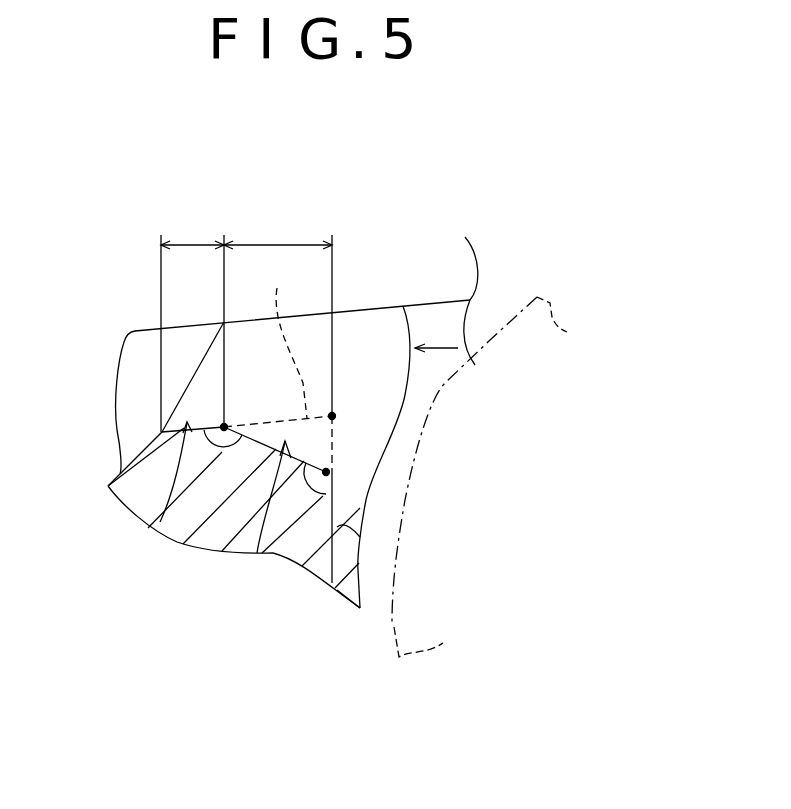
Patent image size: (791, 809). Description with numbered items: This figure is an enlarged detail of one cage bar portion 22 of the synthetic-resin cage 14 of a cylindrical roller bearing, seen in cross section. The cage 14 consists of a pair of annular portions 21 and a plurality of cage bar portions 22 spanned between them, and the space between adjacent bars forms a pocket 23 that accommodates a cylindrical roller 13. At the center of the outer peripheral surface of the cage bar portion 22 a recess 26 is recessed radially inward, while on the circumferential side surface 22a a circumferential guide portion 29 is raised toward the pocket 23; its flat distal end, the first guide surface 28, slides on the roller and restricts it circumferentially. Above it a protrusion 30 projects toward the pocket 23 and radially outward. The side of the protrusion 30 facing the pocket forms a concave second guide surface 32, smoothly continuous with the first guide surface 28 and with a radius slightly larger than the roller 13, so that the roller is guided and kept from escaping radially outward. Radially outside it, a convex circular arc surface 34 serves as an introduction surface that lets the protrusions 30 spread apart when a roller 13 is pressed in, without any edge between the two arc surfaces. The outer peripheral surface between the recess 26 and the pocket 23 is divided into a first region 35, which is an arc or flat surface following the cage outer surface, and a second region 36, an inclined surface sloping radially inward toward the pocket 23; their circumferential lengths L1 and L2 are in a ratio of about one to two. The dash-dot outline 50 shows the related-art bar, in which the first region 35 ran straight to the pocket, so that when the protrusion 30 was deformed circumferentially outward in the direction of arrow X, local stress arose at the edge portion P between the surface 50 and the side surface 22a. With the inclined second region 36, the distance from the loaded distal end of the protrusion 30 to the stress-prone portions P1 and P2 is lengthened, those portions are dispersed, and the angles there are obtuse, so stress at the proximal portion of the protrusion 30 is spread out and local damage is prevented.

The cylindrical roller 13 is at (392, 623).
The cage 14 is at (126, 321).
The annular portion 21 is at (452, 300).
The cage bar portion 22 is at (185, 546).
The circumferential side surface 22a is at (360, 537).
The pocket 23 is at (440, 330).
The recess 26 is at (108, 480).
The first guide surface 28 is at (360, 570).
The circumferential guide portion 29 is at (348, 610).
The protrusion 30 is at (370, 327).
The second guide surface 32 is at (382, 452).
The circular arc surface 34 is at (405, 305).
The first region of outer peripheral surface 35 is at (160, 522).
The second region of outer peripheral surface 36 is at (257, 553).
The outline of related-art cage bar portion 50 is at (282, 338).
The edge portion P is at (332, 416).
The stress-prone portion P1 is at (329, 472).
The stress-prone portion P2 is at (226, 426).
The circumferential dimension of first region L1 is at (192, 323).
The circumferential dimension of second region L2 is at (278, 232).
The circumferentially outward load direction X is at (450, 349).